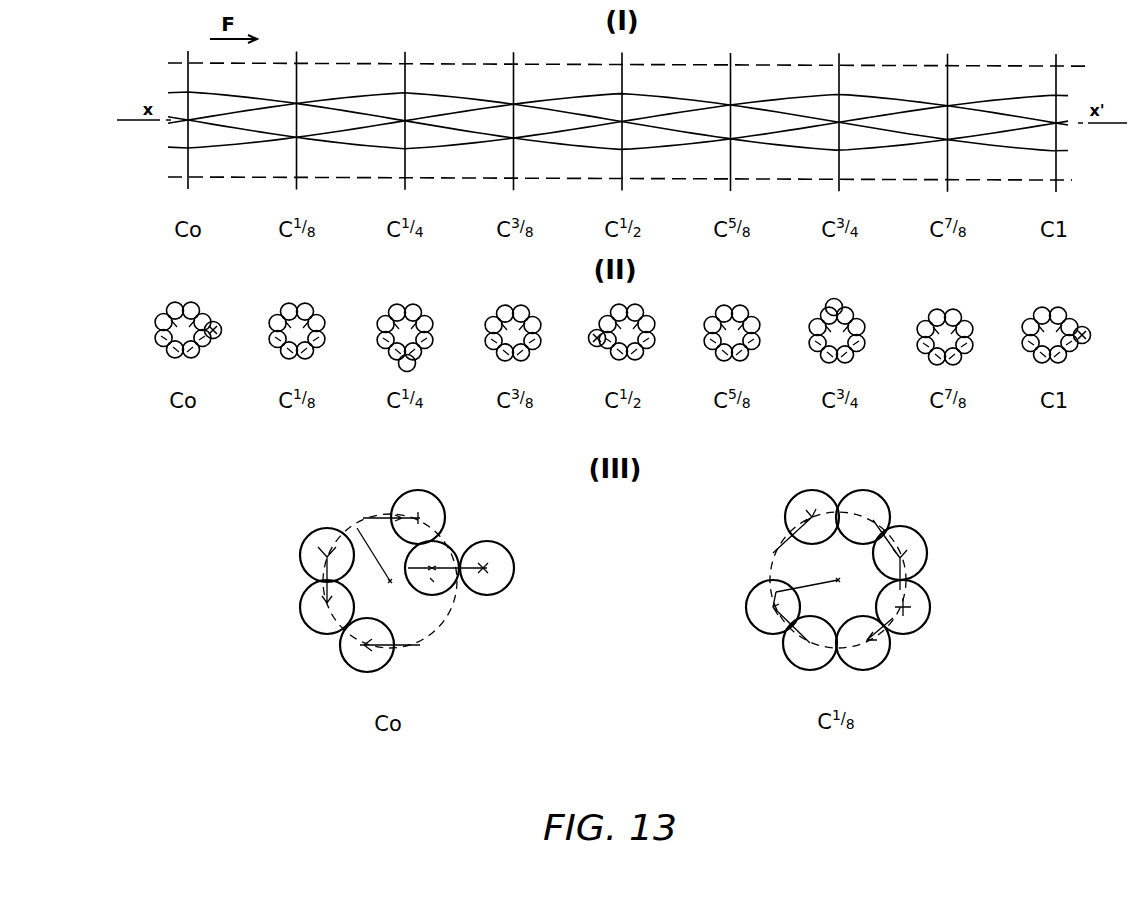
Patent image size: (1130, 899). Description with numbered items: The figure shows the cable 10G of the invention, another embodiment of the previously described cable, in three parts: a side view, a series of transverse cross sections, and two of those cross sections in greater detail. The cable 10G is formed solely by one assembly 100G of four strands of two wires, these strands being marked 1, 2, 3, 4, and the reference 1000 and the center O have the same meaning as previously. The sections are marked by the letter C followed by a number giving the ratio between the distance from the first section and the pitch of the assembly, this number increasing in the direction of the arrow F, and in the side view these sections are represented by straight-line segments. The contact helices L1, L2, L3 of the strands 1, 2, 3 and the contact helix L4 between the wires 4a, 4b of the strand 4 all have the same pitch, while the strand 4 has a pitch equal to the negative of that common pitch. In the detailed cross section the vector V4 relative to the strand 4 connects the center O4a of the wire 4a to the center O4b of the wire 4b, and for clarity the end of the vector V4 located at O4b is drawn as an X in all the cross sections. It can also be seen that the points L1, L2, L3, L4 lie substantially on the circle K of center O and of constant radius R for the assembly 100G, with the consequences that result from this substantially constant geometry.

The cable 10G is at (618, 352).
The assembly 100G is at (866, 93).
The reference of the assembly 1000 is at (483, 63).
The contact helix L1 is at (219, 114).
The contact helix L2 is at (266, 148).
The contact helix L3 is at (236, 126).
The contact helix L4 is at (218, 90).
The strand 1 is at (343, 657).
The strand 2 is at (300, 567).
The strand 3 is at (417, 490).
The strand 4 is at (717, 572).
The wire 4a is at (417, 593).
The wire 4b is at (513, 568).
The circle K is at (450, 541).
The radius R is at (597, 560).
The center O is at (390, 582).
The center of wire 4a O4a is at (412, 560).
The center of wire 4b O4b is at (503, 556).
The vector V4 is at (437, 585).